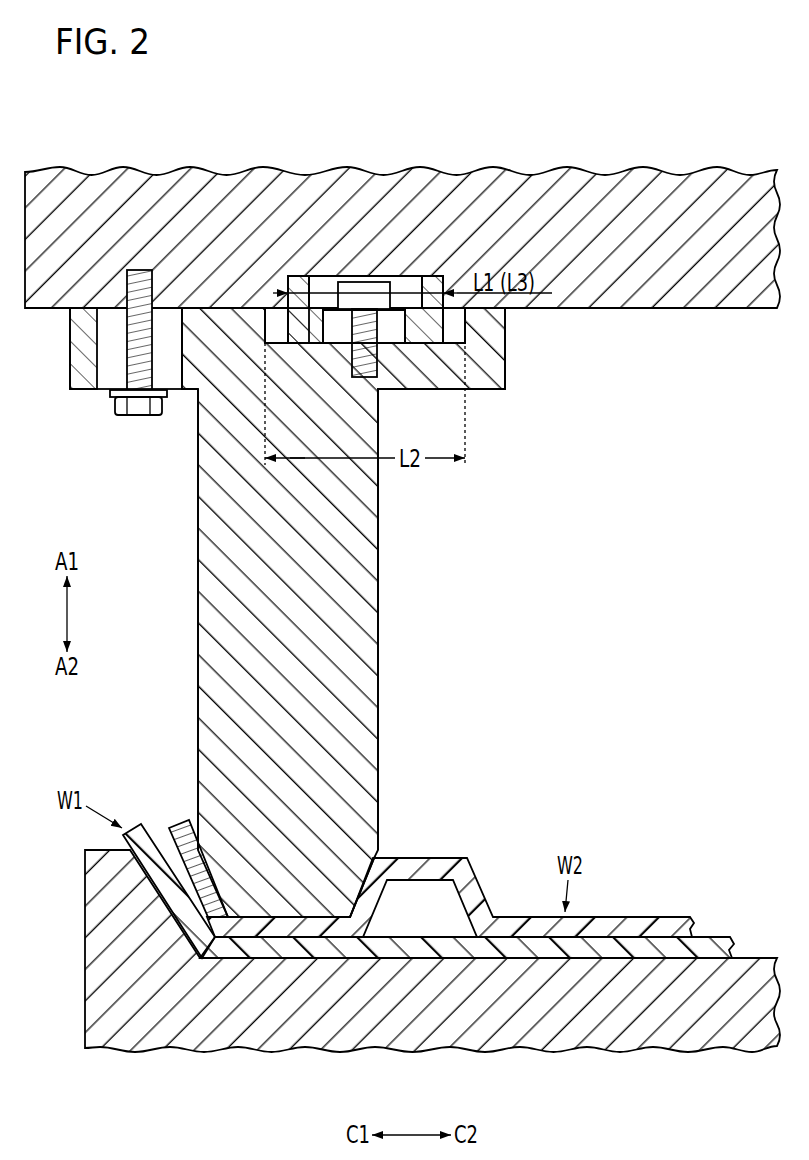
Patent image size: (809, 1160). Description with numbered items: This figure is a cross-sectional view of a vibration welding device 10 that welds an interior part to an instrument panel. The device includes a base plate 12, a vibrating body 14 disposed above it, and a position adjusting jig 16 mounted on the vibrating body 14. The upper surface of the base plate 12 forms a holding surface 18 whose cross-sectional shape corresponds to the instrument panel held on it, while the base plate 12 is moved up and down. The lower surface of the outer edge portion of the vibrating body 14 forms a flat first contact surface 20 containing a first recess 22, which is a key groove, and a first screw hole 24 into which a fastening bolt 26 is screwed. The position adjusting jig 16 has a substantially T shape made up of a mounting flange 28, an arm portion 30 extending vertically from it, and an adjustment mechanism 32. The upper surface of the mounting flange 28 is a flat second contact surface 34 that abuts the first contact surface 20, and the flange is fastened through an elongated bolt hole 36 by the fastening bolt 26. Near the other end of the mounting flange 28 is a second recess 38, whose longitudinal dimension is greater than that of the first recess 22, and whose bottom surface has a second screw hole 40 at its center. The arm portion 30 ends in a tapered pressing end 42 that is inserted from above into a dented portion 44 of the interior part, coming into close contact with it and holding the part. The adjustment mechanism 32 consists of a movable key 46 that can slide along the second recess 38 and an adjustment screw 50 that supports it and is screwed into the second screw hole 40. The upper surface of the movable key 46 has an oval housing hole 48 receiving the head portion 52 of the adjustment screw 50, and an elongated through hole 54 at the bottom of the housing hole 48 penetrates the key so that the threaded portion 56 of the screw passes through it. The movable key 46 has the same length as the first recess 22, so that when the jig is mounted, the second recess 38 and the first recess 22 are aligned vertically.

The vibration welding device 10 is at (641, 91).
The base plate 12 is at (173, 1057).
The vibrating body 14 is at (697, 157).
The position adjusting jig 16 is at (408, 645).
The holding surface 18 is at (760, 956).
The first contact surface 20 is at (49, 310).
The first recess 22 is at (440, 284).
The first screw hole 24 is at (137, 268).
The fastening bolt 26 is at (137, 417).
The mounting flange 28 is at (500, 373).
The arm portion 30 is at (215, 588).
The adjustment mechanism 32 is at (380, 260).
The second contact surface 34 is at (82, 306).
The bolt hole 36 is at (105, 377).
The second recess 38 is at (272, 335).
The second screw hole 40 is at (377, 392).
The pressing end 42 is at (305, 905).
The dented portion 44 is at (205, 852).
The movable key 46 is at (298, 275).
The housing hole 48 is at (411, 284).
The adjustment screw 50 is at (350, 276).
The head portion 52 is at (365, 292).
The through hole 54 is at (392, 334).
The threaded portion 56 is at (447, 318).